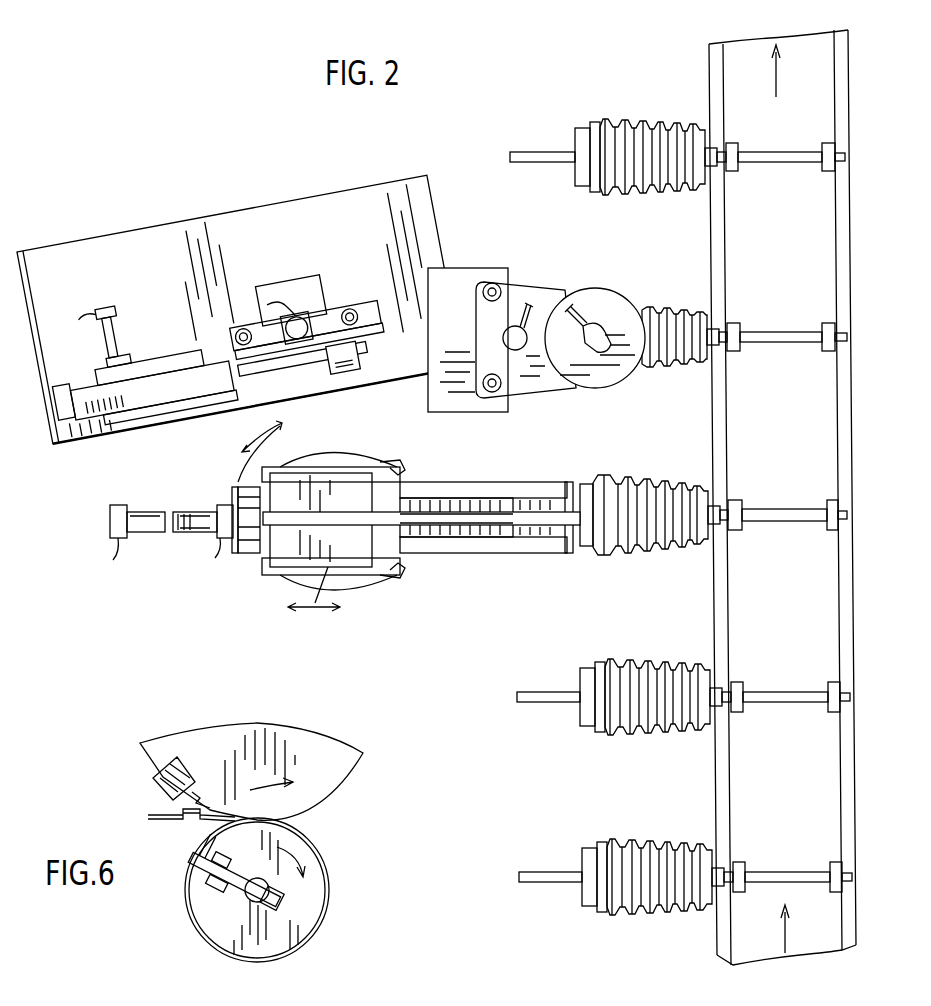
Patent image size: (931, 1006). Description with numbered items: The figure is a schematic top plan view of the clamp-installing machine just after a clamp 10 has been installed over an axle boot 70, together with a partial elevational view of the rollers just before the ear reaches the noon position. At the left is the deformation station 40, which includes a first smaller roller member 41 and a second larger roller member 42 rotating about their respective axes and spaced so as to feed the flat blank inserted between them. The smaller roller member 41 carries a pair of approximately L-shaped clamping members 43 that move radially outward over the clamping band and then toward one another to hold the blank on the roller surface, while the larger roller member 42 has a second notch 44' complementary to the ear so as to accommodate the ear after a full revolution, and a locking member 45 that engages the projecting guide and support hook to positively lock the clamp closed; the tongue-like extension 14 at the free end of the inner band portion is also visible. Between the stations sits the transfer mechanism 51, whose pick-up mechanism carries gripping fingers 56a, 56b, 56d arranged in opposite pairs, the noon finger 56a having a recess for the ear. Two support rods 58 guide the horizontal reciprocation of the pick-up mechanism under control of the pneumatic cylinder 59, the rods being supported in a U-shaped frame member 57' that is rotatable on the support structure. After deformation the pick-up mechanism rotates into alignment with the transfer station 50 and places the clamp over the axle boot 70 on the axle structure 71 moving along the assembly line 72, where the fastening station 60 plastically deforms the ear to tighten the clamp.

In FIG. 2, the clamp 10 is at (158, 383).
In FIG. 2, the deformation station 40 is at (187, 435).
In FIG. 2, the second larger roller member 42 is at (358, 345).
In FIG. 6, the second larger roller member 42 is at (345, 760).
In FIG. 2, the locking member 45 is at (348, 367).
In FIG. 6, the locking member 45 is at (178, 760).
In FIG. 2, the transfer station 50 is at (598, 462).
In FIG. 2, the transfer mechanism 51 is at (363, 447).
In FIG. 2, the gripping finger 56a is at (393, 527).
In FIG. 2, the gripping finger 56b is at (393, 465).
In FIG. 2, the gripping finger 56d is at (393, 577).
In FIG. 2, the U-shaped frame member 57' is at (543, 461).
In FIG. 2, the support rods 58 is at (487, 495).
In FIG. 2, the pneumatic cylinder 59 is at (147, 533).
In FIG. 2, the fastening station 60 is at (607, 283).
In FIG. 2, the axle boot 70 is at (637, 122).
In FIG. 2, the axle structure 71 is at (778, 147).
In FIG. 2, the assembly line 72 is at (850, 240).
In FIG. 6, the tongue-like extension 14 is at (210, 827).
In FIG. 6, the first smaller roller member 41 is at (312, 897).
In FIG. 6, the clamping members 43 is at (233, 880).
In FIG. 6, the second notch 44' is at (208, 787).